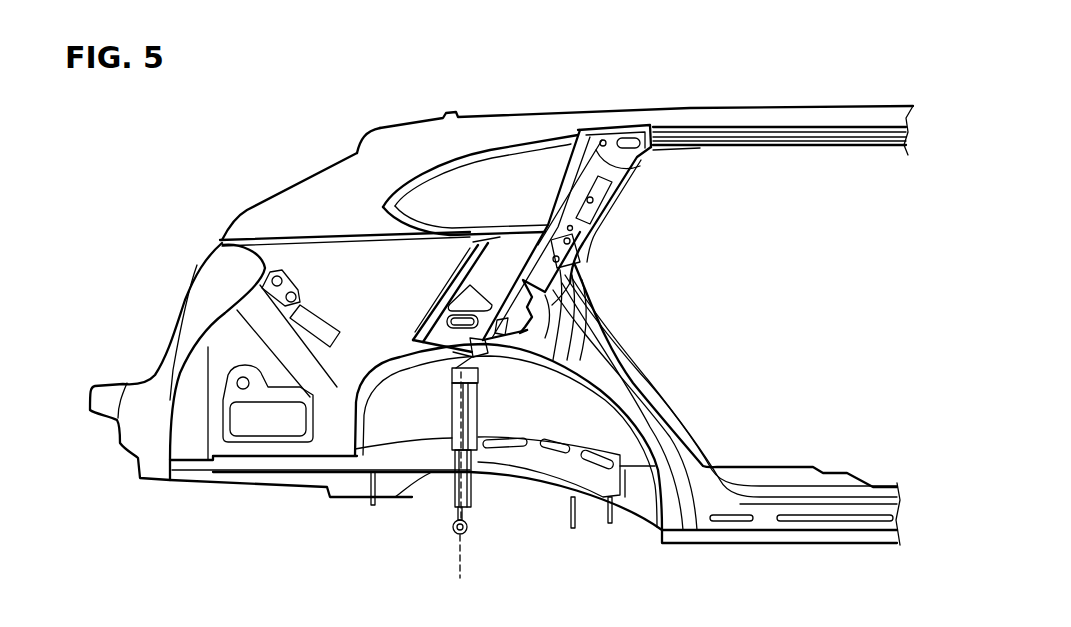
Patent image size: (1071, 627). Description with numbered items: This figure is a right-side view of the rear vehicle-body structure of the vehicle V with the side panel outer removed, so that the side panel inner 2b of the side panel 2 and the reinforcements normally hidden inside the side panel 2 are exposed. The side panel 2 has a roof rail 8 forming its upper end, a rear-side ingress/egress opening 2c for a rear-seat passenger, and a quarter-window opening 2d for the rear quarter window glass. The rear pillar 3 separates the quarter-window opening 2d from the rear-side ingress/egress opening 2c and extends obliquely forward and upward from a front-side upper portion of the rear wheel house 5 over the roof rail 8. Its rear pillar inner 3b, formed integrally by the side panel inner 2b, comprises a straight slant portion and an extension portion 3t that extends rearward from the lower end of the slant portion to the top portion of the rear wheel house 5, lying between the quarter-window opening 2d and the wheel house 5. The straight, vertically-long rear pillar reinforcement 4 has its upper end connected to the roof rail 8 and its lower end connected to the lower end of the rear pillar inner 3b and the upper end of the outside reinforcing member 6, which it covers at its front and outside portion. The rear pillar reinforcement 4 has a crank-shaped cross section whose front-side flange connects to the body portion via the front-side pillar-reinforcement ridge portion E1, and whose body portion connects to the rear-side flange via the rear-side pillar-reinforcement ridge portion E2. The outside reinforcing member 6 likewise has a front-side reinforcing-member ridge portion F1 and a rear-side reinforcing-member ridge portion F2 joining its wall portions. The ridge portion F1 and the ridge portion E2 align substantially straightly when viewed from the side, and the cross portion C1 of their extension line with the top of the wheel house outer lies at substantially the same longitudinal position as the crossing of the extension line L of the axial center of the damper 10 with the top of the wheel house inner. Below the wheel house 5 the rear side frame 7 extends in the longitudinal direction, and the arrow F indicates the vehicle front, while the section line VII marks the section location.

The side panel 2 is at (298, 187).
The side panel inner 2b is at (380, 142).
The rear-side ingress/egress opening 2c is at (848, 146).
The quarter-window opening 2d is at (460, 170).
The rear pillar 3 is at (600, 226).
The extension portion 3t is at (537, 310).
The rear pillar inner 3b is at (619, 316).
The rear pillar reinforcement 4 is at (607, 211).
The rear wheel house 5 is at (393, 397).
The outside reinforcing member 6 is at (422, 310).
The rear side frame 7 is at (613, 490).
The roof rail 8 is at (845, 108).
The damper 10 is at (478, 418).
The cross portion C1 is at (447, 368).
The front-side pillar-reinforcement ridge portion E1 is at (580, 244).
The rear-side pillar-reinforcement ridge portion E2 is at (563, 207).
The front-side reinforcing-member ridge portion F1 is at (573, 281).
The rear-side reinforcing-member ridge portion F2 is at (460, 263).
The vehicle V is at (668, 73).
The vehicle front direction F is at (228, 517).
The extension line L is at (457, 555).
The section line VII is at (510, 292).